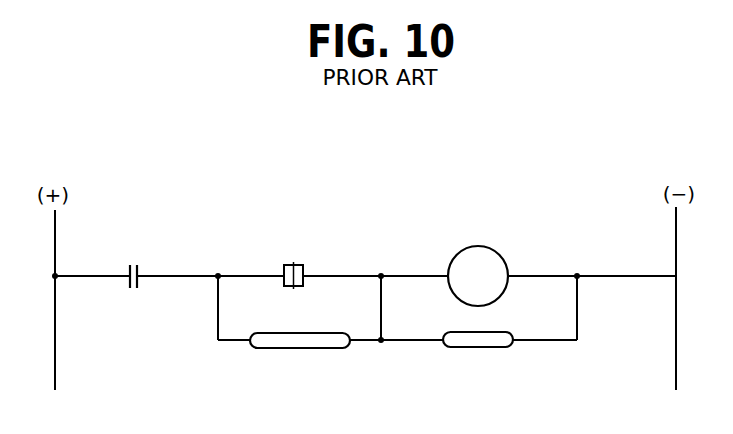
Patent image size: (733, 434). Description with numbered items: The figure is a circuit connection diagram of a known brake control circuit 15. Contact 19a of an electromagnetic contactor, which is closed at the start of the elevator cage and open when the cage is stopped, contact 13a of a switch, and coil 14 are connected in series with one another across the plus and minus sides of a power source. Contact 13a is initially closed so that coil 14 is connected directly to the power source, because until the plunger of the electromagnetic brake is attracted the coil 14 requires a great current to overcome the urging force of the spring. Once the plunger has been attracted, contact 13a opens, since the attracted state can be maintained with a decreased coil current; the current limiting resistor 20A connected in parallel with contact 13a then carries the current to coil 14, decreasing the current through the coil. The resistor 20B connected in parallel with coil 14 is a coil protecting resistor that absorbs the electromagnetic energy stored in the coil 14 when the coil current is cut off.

The brake control circuit 15 is at (141, 381).
The contact of electromagnetic contactor 19a is at (140, 273).
The contact of switch 13a is at (306, 272).
The coil 14 is at (507, 262).
The current limiting resistor 20A is at (302, 348).
The coil protecting resistor 20B is at (480, 347).